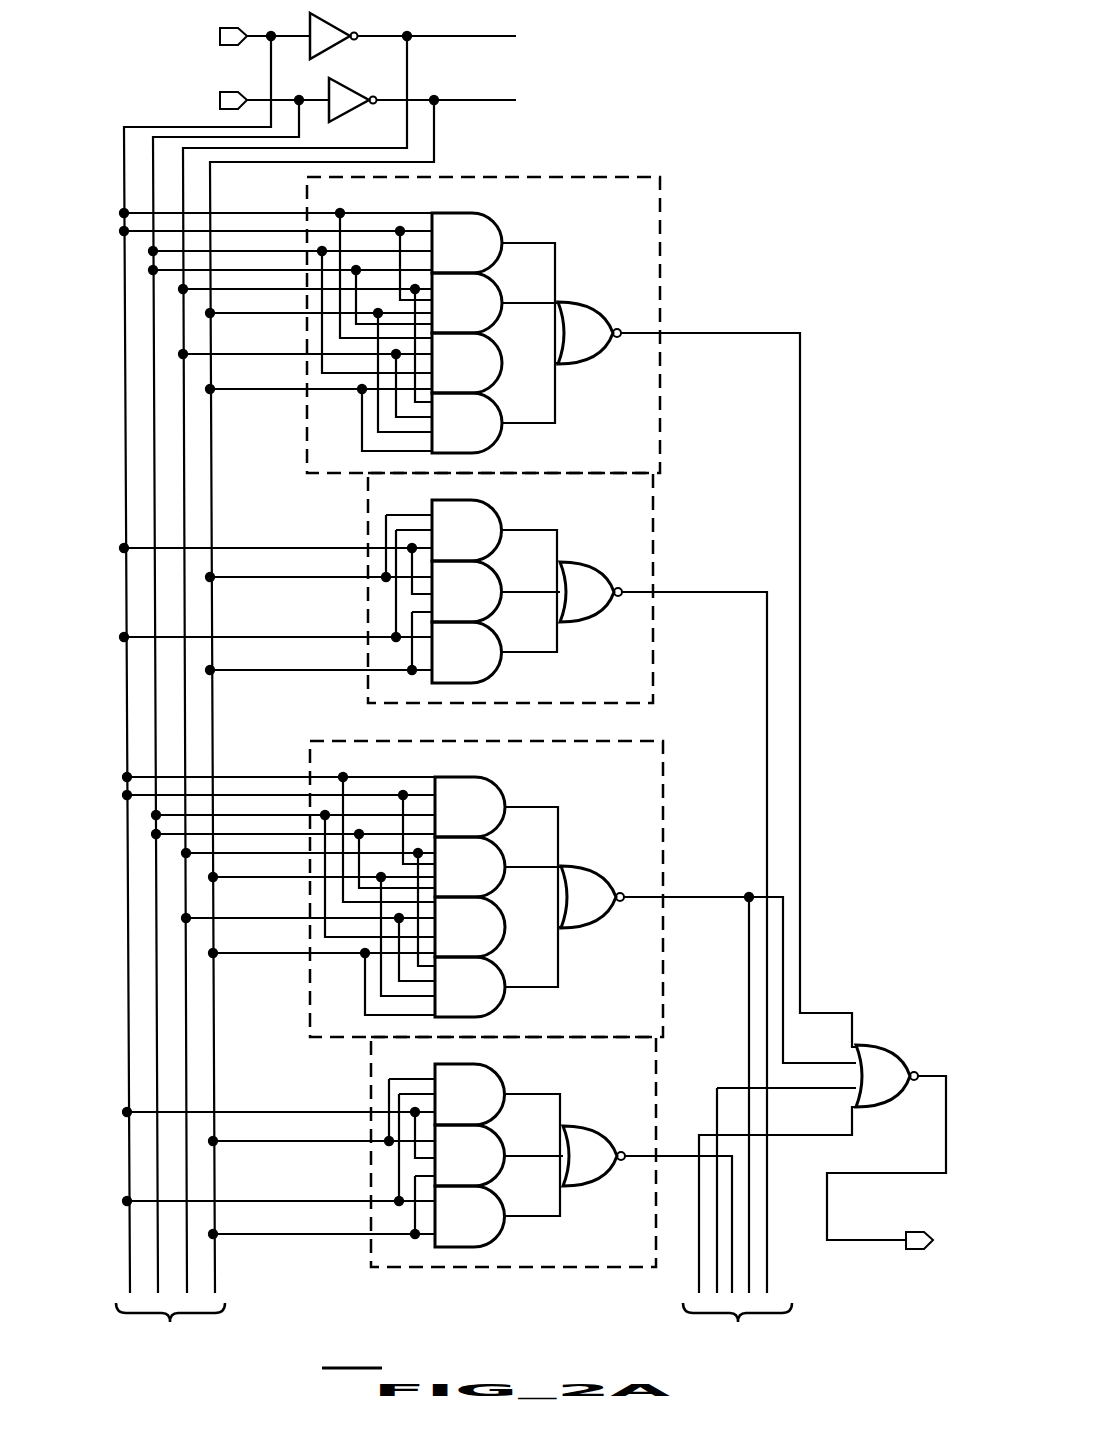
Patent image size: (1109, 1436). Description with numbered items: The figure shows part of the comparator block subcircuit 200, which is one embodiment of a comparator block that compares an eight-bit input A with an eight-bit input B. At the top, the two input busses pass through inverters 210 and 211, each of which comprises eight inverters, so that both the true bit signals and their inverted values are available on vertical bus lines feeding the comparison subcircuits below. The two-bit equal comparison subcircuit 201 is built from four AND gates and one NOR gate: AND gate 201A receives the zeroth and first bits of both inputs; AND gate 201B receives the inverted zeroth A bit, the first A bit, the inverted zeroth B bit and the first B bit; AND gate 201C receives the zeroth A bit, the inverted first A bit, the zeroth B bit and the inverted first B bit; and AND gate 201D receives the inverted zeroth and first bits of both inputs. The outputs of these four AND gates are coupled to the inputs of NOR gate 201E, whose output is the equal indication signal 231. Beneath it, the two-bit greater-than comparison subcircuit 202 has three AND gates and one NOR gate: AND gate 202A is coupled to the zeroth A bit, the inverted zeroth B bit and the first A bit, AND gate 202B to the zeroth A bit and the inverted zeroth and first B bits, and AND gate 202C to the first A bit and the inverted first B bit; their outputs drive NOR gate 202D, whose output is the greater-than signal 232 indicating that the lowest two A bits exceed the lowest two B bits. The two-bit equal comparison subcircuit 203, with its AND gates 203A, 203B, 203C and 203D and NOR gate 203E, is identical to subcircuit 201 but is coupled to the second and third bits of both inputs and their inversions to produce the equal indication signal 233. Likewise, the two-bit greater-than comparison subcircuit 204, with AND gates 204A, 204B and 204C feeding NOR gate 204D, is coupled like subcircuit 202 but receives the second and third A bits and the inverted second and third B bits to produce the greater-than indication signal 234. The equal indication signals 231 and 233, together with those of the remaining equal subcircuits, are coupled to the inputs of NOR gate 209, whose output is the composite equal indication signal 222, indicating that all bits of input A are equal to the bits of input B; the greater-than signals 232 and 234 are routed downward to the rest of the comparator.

The comparator block subcircuit 200 is at (773, 28).
The inverter 210 is at (334, 50).
The inverter 211 is at (346, 114).
The 2-bit equal comparison subcircuit 201 is at (631, 207).
The AND gate 201A is at (500, 227).
The AND gate 201B is at (497, 288).
The AND gate 201C is at (495, 373).
The AND gate 201D is at (495, 437).
The NOR gate 201E is at (597, 310).
The 2-bit greater-than comparison subcircuit 202 is at (641, 507).
The AND gate 202A is at (500, 514).
The AND gate 202B is at (500, 602).
The AND gate 202C is at (500, 672).
The NOR gate 202D is at (594, 617).
The 2-bit equal comparison subcircuit 203 is at (486, 889).
The AND gate 203A is at (495, 794).
The AND gate 203B is at (527, 846).
The AND gate 203C is at (531, 935).
The AND gate 203D is at (510, 991).
The NOR gate 203E is at (602, 880).
The 2-bit greater-than comparison subcircuit 204 is at (513, 1152).
The AND gate 204A is at (510, 1094).
The AND gate 204B is at (495, 1162).
The AND gate 204C is at (513, 1220).
The NOR gate 204D is at (603, 1173).
The equal indication signal 231 is at (722, 332).
The greater-than signal 232 is at (697, 590).
The equal indication signal 233 is at (704, 895).
The greater-than indication signal 234 is at (671, 1154).
The NOR gate 209 is at (893, 1047).
The composite equal indication (EQ) signal 222 is at (880, 1172).